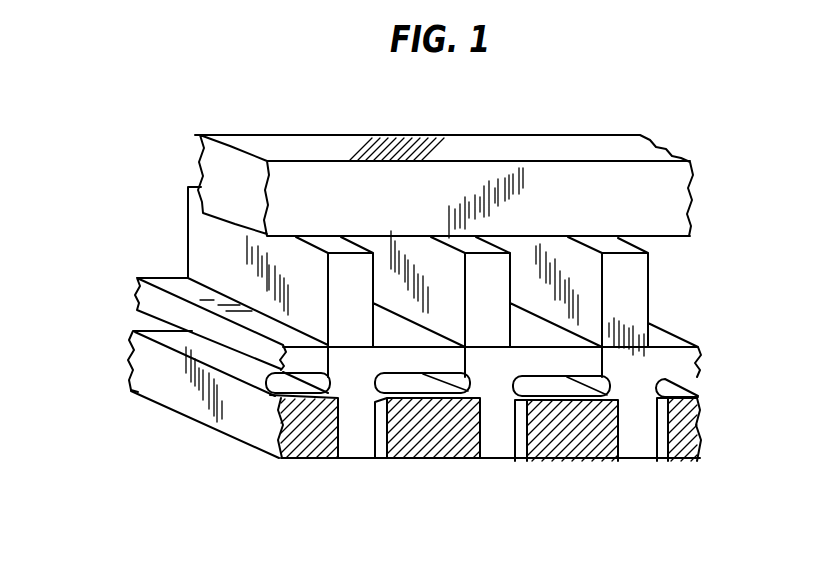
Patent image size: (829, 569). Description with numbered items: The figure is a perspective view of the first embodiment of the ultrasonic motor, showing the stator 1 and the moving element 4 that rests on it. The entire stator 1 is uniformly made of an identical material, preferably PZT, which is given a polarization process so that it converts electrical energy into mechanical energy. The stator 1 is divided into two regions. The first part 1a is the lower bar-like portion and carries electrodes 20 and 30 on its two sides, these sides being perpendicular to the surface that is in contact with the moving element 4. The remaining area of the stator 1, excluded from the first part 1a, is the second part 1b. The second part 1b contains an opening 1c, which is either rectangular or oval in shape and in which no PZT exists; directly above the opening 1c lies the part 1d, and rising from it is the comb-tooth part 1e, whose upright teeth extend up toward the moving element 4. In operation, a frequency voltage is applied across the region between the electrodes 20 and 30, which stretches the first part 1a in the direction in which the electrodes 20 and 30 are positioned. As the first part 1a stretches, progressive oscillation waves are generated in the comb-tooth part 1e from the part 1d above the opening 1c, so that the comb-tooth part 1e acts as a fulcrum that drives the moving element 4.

The moving element 4 is at (305, 143).
The second part 1b is at (119, 183).
The first part 1a is at (119, 327).
The comb-tooth part 1e is at (633, 290).
The part above opening 1d is at (417, 389).
The opening 1c is at (543, 383).
The stator 1 is at (194, 404).
The electrode 20 is at (259, 455).
The electrode 30 is at (126, 392).